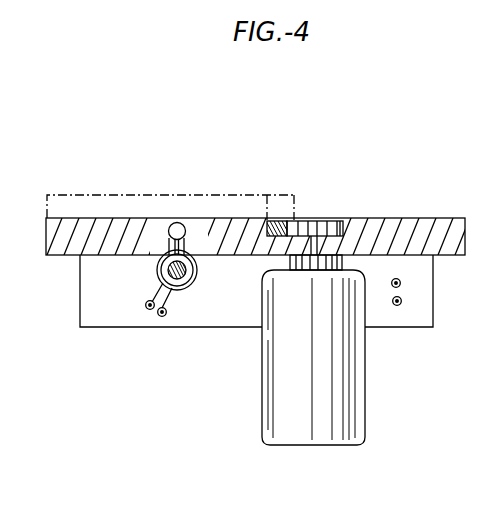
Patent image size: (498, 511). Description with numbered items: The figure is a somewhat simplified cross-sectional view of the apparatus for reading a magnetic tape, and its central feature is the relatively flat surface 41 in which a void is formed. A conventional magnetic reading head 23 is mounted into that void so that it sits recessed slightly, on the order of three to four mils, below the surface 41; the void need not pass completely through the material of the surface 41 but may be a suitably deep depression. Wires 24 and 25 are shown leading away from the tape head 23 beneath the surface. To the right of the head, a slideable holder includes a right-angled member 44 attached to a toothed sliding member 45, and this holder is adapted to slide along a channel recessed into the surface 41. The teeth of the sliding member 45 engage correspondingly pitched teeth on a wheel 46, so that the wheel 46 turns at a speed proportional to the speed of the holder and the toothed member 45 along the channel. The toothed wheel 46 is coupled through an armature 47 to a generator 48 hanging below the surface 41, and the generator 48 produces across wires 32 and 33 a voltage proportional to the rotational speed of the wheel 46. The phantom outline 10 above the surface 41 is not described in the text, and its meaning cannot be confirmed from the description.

The cover plate 10 is at (143, 193).
The magnetic reading head 23 is at (190, 218).
The wire 24 is at (160, 293).
The wire 25 is at (168, 303).
The wire 32 is at (365, 292).
The wire 33 is at (365, 312).
The flat surface 41 is at (440, 220).
The right-angled member 44 is at (297, 220).
The toothed sliding member 45 is at (287, 220).
The toothed wheel 46 is at (336, 220).
The armature 47 is at (296, 240).
The generator 48 is at (275, 390).